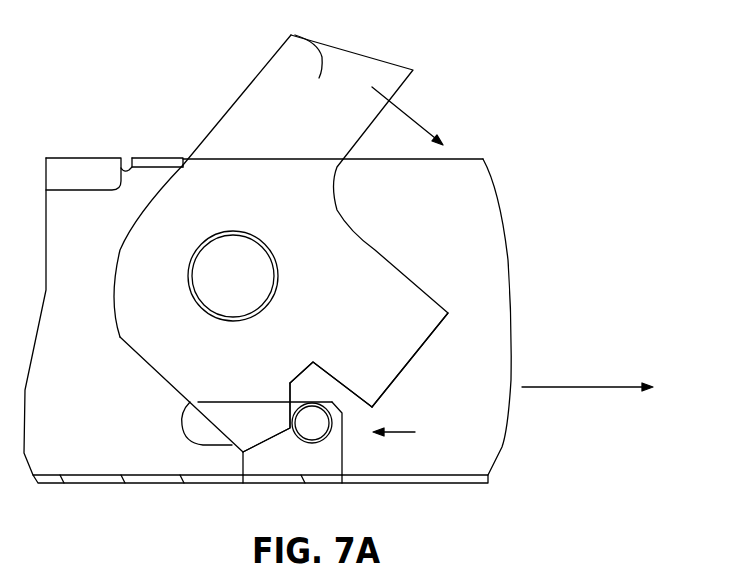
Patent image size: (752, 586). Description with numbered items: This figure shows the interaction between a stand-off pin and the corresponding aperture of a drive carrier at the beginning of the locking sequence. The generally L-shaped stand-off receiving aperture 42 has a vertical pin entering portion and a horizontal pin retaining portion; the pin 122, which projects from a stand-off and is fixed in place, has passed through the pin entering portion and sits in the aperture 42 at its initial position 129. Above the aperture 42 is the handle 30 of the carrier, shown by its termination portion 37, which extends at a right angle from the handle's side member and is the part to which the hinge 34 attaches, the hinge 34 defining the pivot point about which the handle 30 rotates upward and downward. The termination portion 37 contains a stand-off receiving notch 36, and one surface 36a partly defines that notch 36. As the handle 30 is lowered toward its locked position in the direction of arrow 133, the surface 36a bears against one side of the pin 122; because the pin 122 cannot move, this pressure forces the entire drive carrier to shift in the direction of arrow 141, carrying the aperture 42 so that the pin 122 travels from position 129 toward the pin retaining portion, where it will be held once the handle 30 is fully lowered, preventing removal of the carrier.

The handle 30 is at (284, 251).
The hinge 34 is at (297, 265).
The stand-off receiving notch 36 is at (350, 378).
The surface 36a is at (374, 381).
The termination portion 37 is at (178, 333).
The stand-off receiving aperture 42 is at (290, 383).
The pin 122 is at (357, 443).
The position 129 is at (415, 433).
The arrow 133 is at (422, 116).
The arrow 141 is at (610, 388).